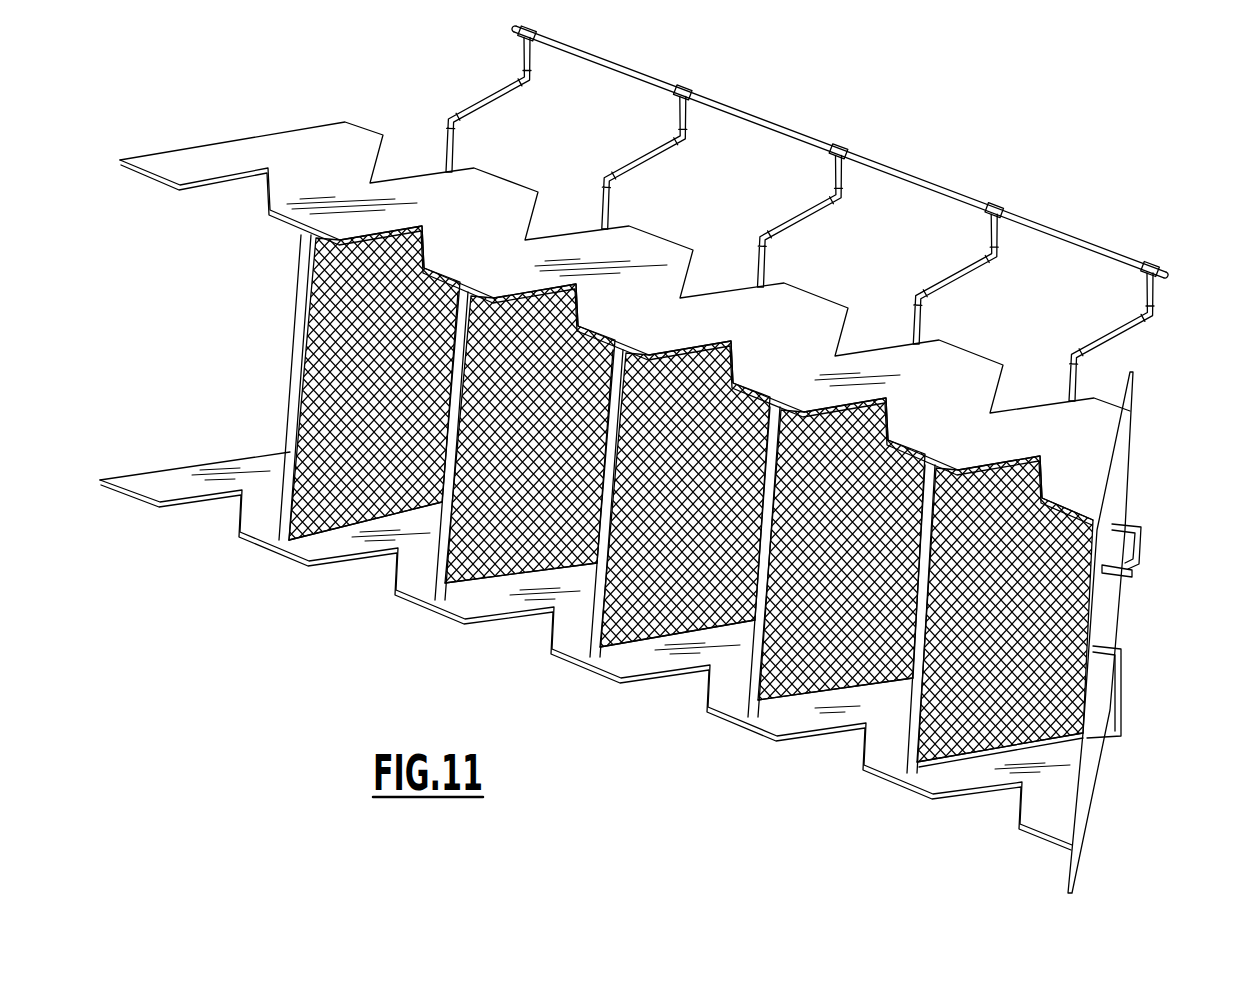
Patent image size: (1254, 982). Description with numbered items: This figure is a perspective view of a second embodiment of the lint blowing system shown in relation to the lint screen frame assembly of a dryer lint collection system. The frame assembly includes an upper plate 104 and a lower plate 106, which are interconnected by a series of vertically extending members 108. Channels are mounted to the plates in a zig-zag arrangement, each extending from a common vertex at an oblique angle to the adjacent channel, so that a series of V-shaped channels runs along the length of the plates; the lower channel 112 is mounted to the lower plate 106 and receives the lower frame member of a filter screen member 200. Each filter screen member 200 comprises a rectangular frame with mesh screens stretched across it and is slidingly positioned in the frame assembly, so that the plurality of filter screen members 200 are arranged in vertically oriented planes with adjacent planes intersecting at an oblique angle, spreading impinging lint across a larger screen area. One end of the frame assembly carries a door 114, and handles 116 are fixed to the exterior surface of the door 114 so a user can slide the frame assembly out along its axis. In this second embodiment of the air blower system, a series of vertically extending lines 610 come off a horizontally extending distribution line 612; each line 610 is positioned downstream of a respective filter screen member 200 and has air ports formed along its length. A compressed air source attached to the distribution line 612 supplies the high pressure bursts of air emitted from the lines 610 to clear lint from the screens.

The upper plate 104 is at (1077, 450).
The lower plate 106 is at (623, 663).
The vertically extending members 108 is at (740, 687).
The lower channel 112 is at (930, 765).
The door 114 is at (1092, 768).
The handles 116 is at (1140, 573).
The filter screen member 200 is at (953, 747).
The vertically extending lines 610 is at (462, 156).
The distribution line 612 is at (1053, 230).